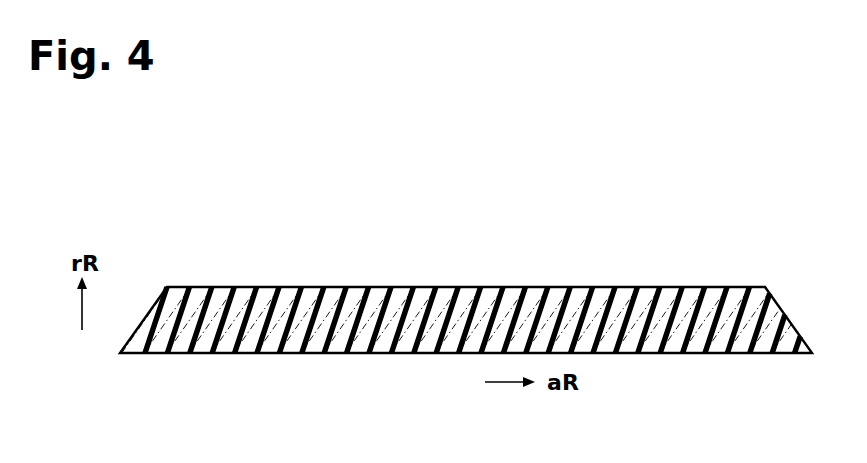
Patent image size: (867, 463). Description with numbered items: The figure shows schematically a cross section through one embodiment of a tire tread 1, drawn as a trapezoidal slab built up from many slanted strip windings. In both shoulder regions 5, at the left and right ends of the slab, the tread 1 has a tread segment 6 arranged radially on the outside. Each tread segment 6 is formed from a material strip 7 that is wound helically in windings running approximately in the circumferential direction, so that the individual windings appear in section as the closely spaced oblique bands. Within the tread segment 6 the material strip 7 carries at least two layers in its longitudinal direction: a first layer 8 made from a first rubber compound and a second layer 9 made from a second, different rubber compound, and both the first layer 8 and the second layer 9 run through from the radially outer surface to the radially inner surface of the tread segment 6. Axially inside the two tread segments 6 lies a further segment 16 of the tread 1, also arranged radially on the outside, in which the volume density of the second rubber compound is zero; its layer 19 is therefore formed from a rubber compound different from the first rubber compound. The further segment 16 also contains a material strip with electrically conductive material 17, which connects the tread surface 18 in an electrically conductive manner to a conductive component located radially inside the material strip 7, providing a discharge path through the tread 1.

The tread 1 is at (138, 254).
The shoulder region 5 is at (166, 256).
The tread segment 6 is at (238, 258).
The material strip 7 is at (724, 355).
The first layer 8 is at (748, 342).
The second layer 9 is at (692, 346).
The further segment 16 is at (492, 256).
The electrically conductive material 17 is at (428, 300).
The tread surface 18 is at (460, 293).
The layer 19 is at (585, 287).